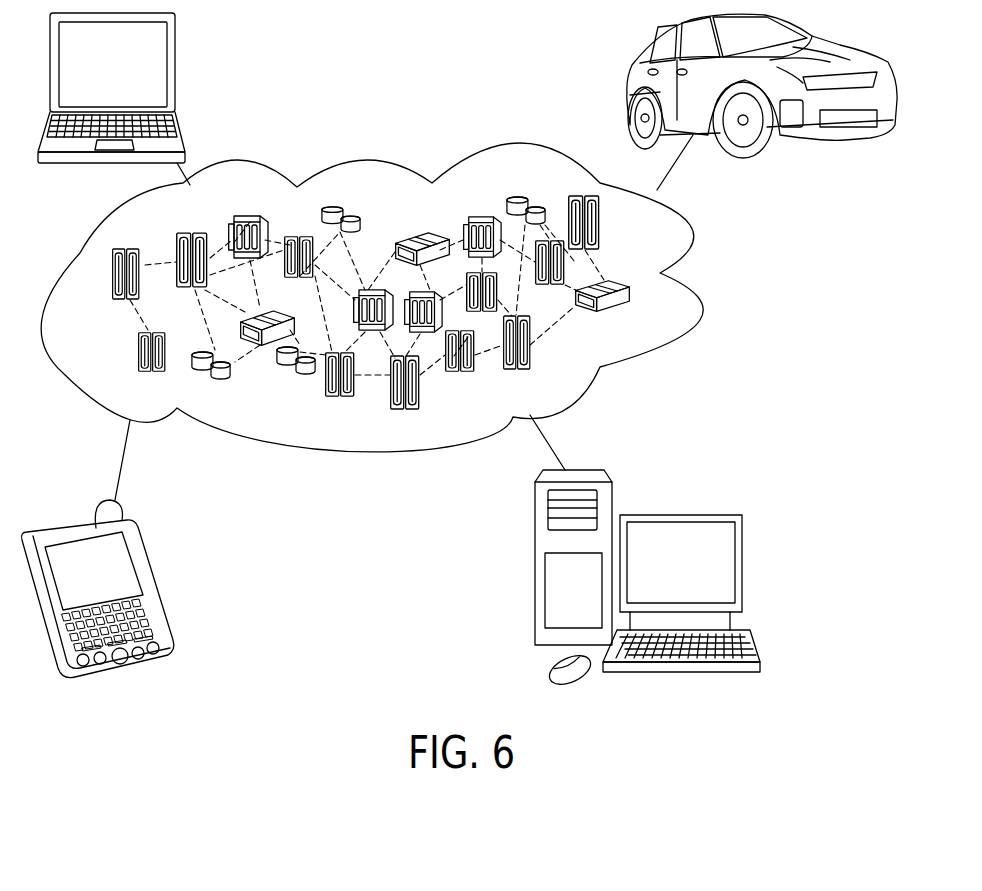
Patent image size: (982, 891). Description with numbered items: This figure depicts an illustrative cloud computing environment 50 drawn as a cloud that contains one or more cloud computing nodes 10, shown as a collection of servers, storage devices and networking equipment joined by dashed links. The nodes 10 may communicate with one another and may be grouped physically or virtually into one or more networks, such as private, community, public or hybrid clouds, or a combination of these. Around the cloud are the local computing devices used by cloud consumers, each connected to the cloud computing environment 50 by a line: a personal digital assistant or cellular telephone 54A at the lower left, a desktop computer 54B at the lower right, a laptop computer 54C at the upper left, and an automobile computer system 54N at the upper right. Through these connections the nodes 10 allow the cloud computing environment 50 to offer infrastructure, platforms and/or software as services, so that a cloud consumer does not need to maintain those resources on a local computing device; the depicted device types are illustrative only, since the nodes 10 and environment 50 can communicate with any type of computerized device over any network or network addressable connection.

The cloud computing nodes 10 is at (650, 322).
The cloud computing environment 50 is at (700, 235).
The personal digital assistant or cellular telephone 54A is at (148, 562).
The desktop computer 54B is at (744, 562).
The laptop computer 54C is at (177, 67).
The automobile computer system 54N is at (812, 35).